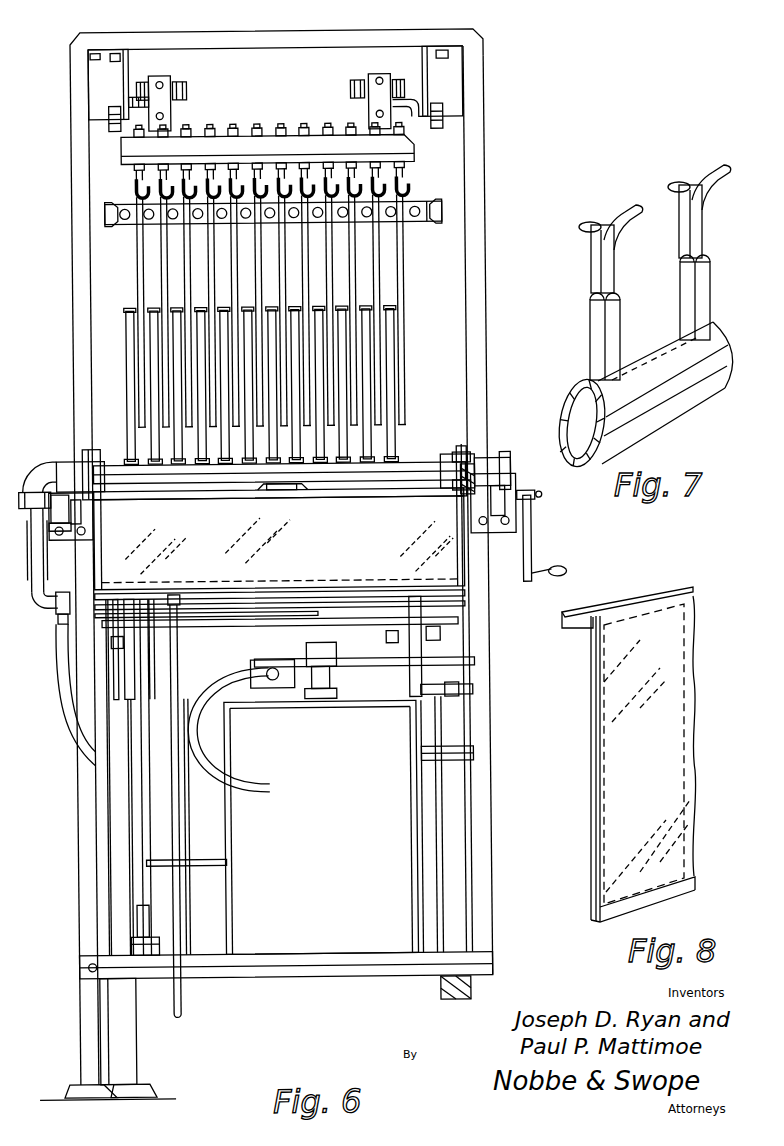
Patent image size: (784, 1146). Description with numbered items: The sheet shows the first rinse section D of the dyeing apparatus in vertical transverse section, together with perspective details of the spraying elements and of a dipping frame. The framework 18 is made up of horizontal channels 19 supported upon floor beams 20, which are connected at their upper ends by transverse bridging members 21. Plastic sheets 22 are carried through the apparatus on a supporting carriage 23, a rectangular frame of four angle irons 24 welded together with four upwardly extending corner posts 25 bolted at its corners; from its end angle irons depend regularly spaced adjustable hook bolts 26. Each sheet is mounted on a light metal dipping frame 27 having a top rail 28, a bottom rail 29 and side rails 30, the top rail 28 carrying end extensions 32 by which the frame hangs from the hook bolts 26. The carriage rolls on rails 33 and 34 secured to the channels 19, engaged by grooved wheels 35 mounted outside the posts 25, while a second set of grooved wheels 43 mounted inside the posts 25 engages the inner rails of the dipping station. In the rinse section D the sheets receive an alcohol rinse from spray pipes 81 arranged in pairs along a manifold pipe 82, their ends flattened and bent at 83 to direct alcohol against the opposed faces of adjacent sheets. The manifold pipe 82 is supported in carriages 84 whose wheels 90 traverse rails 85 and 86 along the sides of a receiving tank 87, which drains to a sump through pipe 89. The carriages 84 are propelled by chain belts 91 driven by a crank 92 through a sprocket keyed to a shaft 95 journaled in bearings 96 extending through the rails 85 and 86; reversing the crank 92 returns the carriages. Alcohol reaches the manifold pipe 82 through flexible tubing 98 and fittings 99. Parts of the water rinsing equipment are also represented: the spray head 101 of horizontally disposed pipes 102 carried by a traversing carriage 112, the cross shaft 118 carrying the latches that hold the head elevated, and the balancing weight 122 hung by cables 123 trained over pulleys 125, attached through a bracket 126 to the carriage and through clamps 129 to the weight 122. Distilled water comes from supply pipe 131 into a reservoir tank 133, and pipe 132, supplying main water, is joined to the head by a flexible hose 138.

In FIG. 6, the framework 18 is at (68, 118).
In FIG. 6, the horizontal channels 19 is at (126, 88).
In FIG. 6, the floor beams 20 is at (82, 172).
In FIG. 6, the bridging members 21 is at (283, 40).
In FIG. 8, the plastic sheets 22 is at (645, 755).
In FIG. 6, the supporting carriage 23 is at (263, 138).
In FIG. 6, the angle irons 24 is at (235, 146).
In FIG. 6, the corner posts 25 is at (170, 118).
In FIG. 6, the hook bolts 26 is at (132, 191).
In FIG. 6, the dipping frames 27 is at (162, 281).
In FIG. 8, the dipping frames 27 is at (617, 600).
In FIG. 8, the top rail 28 is at (665, 598).
In FIG. 8, the bottom rail 29 is at (683, 890).
In FIG. 8, the side rail 30 is at (596, 742).
In FIG. 6, the end extensions 32 is at (410, 190).
In FIG. 8, the end extensions 32 is at (576, 628).
In FIG. 6, the rail 33 is at (130, 105).
In FIG. 6, the rail 34 is at (425, 100).
In FIG. 6, the grooved wheels 35 is at (143, 84).
In FIG. 6, the grooved wheels 43 is at (186, 90).
In FIG. 6, the spray pipes 81 is at (150, 336).
In FIG. 7, the spray pipes 81 is at (612, 279).
In FIG. 6, the manifold pipe 82 is at (432, 466).
In FIG. 7, the manifold pipe 82 is at (667, 366).
In FIG. 6, the flattened and bent ends 83 is at (390, 316).
In FIG. 7, the flattened and bent ends 83 is at (620, 214).
In FIG. 6, the carriages 84 is at (68, 462).
In FIG. 6, the rail 85 is at (104, 494).
In FIG. 6, the rail 86 is at (365, 481).
In FIG. 6, the receiving tank 87 is at (412, 575).
In FIG. 6, the pipe 89 is at (174, 654).
In FIG. 6, the wheels 90 is at (88, 462).
In FIG. 6, the chain belts 91 is at (70, 540).
In FIG. 6, the crank 92 is at (540, 574).
In FIG. 6, the shaft 95 is at (220, 504).
In FIG. 6, the bearings 96 is at (44, 524).
In FIG. 6, the flexible tubing 98 is at (62, 654).
In FIG. 6, the fittings 99 is at (30, 578).
In FIG. 6, the head 101 is at (122, 219).
In FIG. 6, the horizontally disposed pipes 102 is at (421, 226).
In FIG. 6, the traversing carriage 112 is at (302, 680).
In FIG. 6, the cross shaft 118 is at (300, 606).
In FIG. 6, the weight 122 is at (125, 960).
In FIG. 6, the cables 123 is at (138, 798).
In FIG. 6, the pulleys 125 is at (140, 615).
In FIG. 6, the bracket 126 is at (436, 690).
In FIG. 6, the clamps 129 is at (135, 942).
In FIG. 6, the supply pipe 131 is at (378, 670).
In FIG. 6, the pipe 132 is at (440, 752).
In FIG. 6, the reservoir tank 133 is at (300, 946).
In FIG. 6, the flexible hose 138 is at (212, 784).
In FIG. 6, the first rinse section D is at (106, 412).